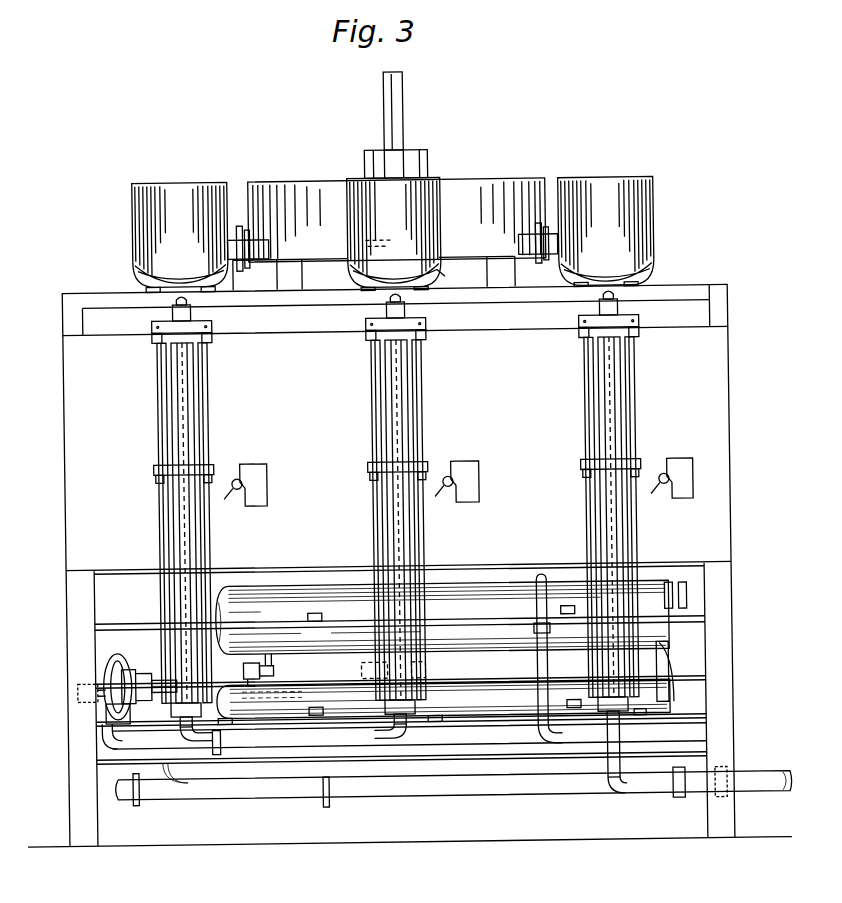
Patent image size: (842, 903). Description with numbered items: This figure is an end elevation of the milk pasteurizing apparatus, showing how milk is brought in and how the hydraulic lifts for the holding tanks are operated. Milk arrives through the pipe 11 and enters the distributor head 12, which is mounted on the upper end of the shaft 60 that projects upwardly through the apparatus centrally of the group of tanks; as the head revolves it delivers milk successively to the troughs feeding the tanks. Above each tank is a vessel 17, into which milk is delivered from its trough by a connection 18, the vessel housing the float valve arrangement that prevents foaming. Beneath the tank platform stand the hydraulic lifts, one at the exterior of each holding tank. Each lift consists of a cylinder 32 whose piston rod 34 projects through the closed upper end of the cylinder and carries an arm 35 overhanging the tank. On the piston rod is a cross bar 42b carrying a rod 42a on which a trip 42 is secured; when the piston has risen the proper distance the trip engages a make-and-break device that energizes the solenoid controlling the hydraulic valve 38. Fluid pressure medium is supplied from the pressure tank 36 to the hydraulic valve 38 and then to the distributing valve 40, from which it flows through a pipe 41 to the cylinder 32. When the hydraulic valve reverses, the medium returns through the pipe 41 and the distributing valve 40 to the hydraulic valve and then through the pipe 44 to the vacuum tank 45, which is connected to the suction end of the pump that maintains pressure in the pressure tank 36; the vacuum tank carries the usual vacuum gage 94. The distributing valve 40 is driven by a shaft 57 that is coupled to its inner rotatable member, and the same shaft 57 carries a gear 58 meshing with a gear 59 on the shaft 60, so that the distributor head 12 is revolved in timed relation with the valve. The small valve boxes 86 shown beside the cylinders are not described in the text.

The pipe 11 is at (410, 110).
The distributor head 12 is at (430, 156).
The vessel 17 is at (193, 186).
The connection 18 is at (392, 257).
The shaft 60 is at (452, 278).
The piston rod 34 is at (179, 300).
The arm 35 is at (176, 312).
The cross bar 42b is at (217, 324).
The cylinder 32 is at (174, 536).
The rod 42a is at (212, 546).
The valve 86 is at (248, 466).
The vacuum tank 45 is at (492, 584).
The hydraulic valve 38 is at (242, 703).
The vacuum gage 94 is at (688, 597).
The pressure tank 36 is at (672, 702).
The pipe 44 is at (272, 672).
The gear 58 is at (360, 669).
The gear 59 is at (424, 666).
The distributing valve 40 is at (108, 681).
The shaft 57 is at (150, 683).
The trip 42 is at (222, 722).
The pipe 41 is at (110, 749).